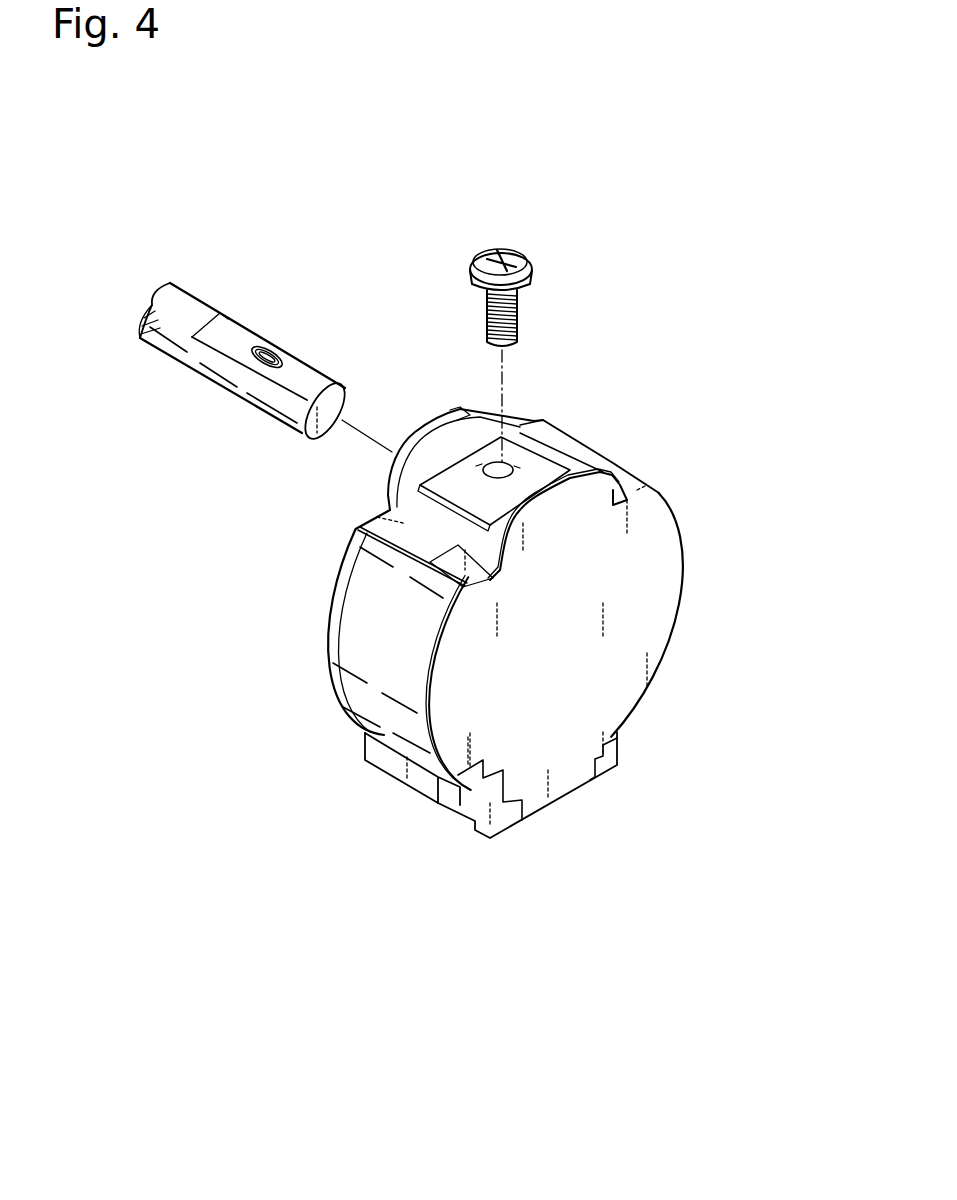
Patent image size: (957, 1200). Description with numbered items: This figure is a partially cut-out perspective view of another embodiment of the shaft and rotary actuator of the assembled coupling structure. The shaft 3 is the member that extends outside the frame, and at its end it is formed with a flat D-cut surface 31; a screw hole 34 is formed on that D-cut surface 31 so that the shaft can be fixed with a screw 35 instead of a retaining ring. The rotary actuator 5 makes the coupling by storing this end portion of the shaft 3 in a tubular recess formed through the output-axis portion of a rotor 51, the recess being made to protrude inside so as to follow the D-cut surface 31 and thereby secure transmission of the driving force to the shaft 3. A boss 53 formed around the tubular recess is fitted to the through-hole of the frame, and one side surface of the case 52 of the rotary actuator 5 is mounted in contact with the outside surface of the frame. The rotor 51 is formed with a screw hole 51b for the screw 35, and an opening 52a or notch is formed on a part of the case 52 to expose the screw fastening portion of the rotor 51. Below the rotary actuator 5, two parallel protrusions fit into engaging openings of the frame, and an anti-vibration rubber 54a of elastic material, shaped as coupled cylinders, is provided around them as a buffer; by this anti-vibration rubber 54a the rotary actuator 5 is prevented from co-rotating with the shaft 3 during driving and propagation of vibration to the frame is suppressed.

The shaft 3 is at (230, 328).
The D-cut surface 31 is at (247, 335).
The screw hole 34 is at (283, 348).
The screw 35 is at (507, 252).
The rotary actuator 5 is at (458, 644).
The rotor 51 is at (562, 480).
The screw hole 51b is at (507, 472).
The case 52 is at (527, 738).
The opening 52a is at (565, 458).
The boss 53 is at (403, 472).
The anti-vibration rubber 54a is at (393, 768).